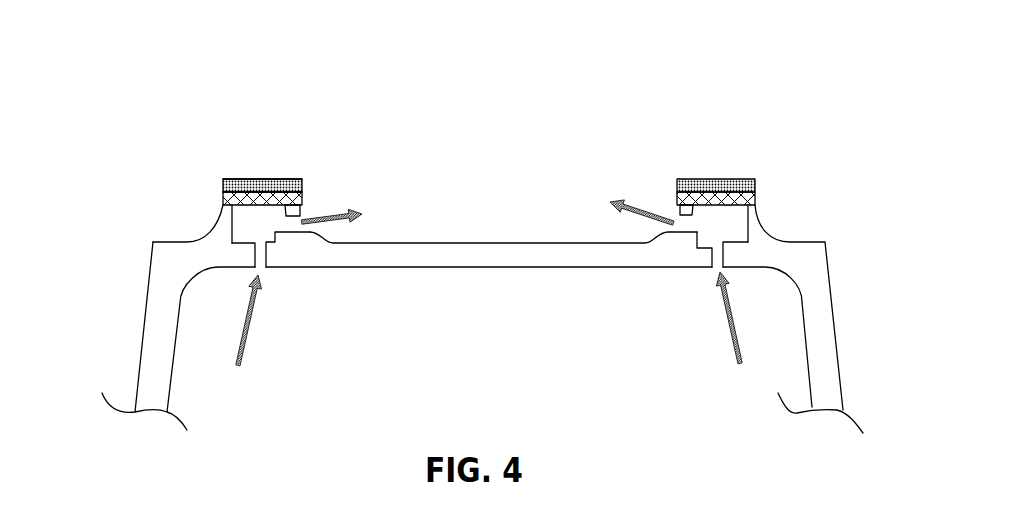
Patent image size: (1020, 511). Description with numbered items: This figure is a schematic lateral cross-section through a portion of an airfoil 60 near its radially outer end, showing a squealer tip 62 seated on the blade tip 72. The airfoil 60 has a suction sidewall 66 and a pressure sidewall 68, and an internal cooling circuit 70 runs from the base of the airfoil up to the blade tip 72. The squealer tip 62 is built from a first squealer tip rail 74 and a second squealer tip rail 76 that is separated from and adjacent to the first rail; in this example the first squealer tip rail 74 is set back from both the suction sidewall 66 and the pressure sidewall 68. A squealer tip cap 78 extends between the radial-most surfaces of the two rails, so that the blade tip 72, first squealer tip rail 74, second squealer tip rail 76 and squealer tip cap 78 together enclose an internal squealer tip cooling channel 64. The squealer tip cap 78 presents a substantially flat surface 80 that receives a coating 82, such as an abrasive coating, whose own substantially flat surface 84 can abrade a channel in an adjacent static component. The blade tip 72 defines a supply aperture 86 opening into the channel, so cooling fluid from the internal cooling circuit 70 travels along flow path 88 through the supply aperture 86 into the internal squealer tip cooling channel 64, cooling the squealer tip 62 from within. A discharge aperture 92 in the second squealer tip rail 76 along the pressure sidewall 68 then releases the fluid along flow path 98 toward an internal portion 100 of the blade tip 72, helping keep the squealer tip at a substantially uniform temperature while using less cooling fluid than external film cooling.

The airfoil 60 is at (80, 35).
The squealer tip 62 is at (442, 131).
The internal squealer tip cooling channel 64 is at (265, 226).
The suction sidewall 66 is at (148, 315).
The pressure sidewall 68 is at (830, 317).
The internal cooling circuit 70 is at (270, 323).
The blade tip 72 is at (530, 230).
The first squealer tip rail 74 is at (222, 204).
The second squealer tip rail 76 is at (302, 212).
The squealer tip cap 78 is at (302, 198).
The substantially flat surface 80 is at (226, 186).
The coating 82 is at (302, 185).
The substantially flat surface 84 is at (234, 176).
The supply aperture 86 is at (708, 254).
The flow path 88 is at (723, 322).
The discharge aperture 92 is at (673, 215).
The flow path 98 is at (642, 205).
The internal portion 100 is at (595, 182).